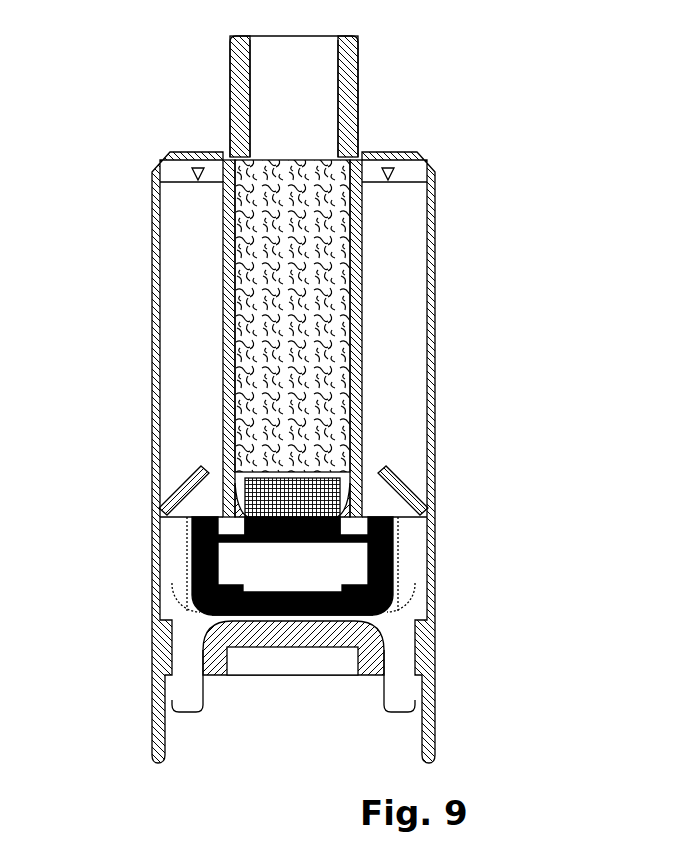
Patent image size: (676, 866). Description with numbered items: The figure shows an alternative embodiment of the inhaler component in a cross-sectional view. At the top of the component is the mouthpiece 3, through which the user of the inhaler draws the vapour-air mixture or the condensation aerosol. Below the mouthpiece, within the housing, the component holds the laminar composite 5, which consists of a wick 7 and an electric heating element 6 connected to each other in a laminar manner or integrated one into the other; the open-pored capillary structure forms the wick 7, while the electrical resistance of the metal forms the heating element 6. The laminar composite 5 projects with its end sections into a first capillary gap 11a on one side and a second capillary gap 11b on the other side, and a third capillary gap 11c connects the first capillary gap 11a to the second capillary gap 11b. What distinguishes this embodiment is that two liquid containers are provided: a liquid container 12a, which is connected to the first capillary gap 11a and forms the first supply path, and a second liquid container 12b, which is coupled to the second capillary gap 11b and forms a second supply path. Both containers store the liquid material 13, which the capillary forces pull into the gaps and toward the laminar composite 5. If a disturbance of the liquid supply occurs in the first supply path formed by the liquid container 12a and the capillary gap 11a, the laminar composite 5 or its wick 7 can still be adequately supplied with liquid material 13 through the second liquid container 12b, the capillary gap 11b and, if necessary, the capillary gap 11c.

The mouthpiece 3 is at (231, 68).
The liquid container 12a is at (436, 343).
The second liquid container 12b is at (150, 348).
The liquid material 13 is at (185, 252).
The first capillary gap 11a is at (404, 548).
The second capillary gap 11b is at (185, 548).
The third capillary gap 11c is at (290, 617).
The laminar composite 5 is at (389, 546).
The electric heating element 6 is at (292, 546).
The wick 7 is at (322, 561).